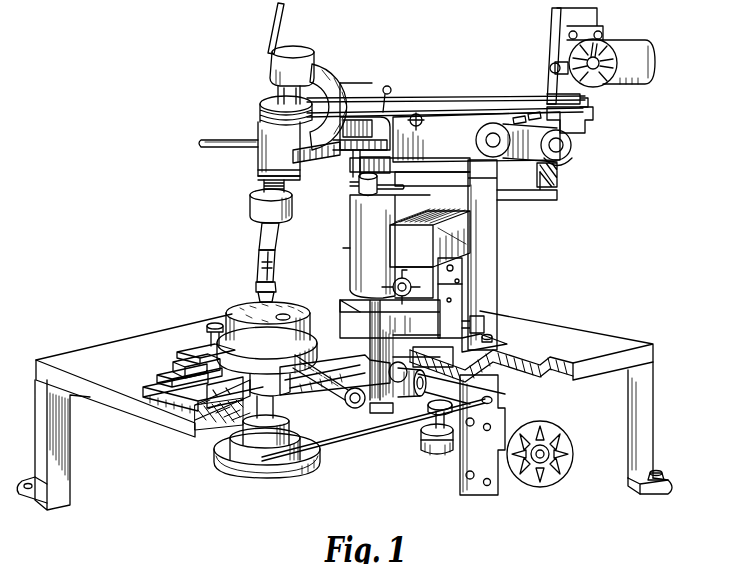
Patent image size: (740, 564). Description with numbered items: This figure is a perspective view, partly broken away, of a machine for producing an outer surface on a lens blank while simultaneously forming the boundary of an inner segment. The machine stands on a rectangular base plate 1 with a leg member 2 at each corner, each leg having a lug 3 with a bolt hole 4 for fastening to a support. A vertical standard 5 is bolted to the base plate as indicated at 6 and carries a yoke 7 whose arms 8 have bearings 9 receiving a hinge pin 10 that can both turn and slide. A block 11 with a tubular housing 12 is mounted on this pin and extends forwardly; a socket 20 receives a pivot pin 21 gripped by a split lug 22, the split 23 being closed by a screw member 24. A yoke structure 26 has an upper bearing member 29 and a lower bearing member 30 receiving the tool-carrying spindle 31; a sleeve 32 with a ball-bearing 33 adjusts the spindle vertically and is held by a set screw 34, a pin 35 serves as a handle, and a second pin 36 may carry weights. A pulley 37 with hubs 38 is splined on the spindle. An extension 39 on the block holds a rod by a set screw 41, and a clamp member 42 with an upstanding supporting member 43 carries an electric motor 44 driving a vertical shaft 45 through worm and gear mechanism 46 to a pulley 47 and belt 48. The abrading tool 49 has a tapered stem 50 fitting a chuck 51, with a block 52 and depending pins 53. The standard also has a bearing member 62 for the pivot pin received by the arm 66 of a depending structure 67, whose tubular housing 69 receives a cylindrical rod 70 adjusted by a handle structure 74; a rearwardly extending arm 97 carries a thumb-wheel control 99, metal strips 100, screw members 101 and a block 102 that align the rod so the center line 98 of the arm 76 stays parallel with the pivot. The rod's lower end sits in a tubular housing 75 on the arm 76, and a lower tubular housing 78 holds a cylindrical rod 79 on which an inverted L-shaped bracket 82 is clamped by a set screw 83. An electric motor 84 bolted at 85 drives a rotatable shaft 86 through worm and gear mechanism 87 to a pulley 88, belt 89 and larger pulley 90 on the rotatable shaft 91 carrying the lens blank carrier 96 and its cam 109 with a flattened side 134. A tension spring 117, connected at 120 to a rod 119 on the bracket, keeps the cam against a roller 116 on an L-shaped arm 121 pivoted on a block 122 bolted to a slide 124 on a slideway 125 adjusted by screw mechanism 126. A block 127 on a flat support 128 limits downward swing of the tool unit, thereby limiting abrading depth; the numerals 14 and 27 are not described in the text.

The base plate 1 is at (577, 338).
The leg member 2 is at (640, 395).
The lug 3 is at (643, 488).
The bolt hole 4 is at (666, 478).
The vertical standard 5 is at (485, 266).
The bolted connection 6 is at (500, 342).
The yoke 7 is at (541, 192).
The arm 8 is at (360, 168).
The bearing 9 is at (563, 160).
The hinge pin 10 is at (571, 146).
The block 11 is at (442, 136).
The tubular housing 12 is at (478, 124).
The head 14 is at (343, 83).
The socket 20 is at (397, 148).
The pivot pin 21 is at (351, 140).
The upstanding lug 22 is at (397, 120).
The split 23 is at (386, 86).
The screw member 24 is at (424, 114).
The yoke structure 26 is at (320, 83).
The block 27 is at (318, 165).
The bearing member 29 is at (290, 70).
The bearing member 30 is at (272, 157).
The tool-carrying spindle 31 is at (258, 238).
The sleeve 32 is at (262, 186).
The ball-bearing 33 is at (255, 208).
The set screw 34 is at (270, 171).
The pin 35 is at (200, 143).
The second pin 36 is at (272, 20).
The pulley 37 is at (260, 107).
The hub 38 is at (278, 92).
The extension 39 is at (516, 116).
The set screw 41 is at (532, 112).
The clamp member 42 is at (580, 118).
The upstanding supporting member 43 is at (552, 40).
The electric motor 44 is at (621, 44).
The vertical shaft 45 is at (555, 70).
The speed-reducing worm and gear mechanism 46 is at (604, 62).
The pulley 47 is at (590, 100).
The belt 48 is at (473, 118).
The abrading tool 49 is at (256, 314).
The tapered stem 50 is at (270, 266).
The chuck 51 is at (262, 254).
The block 52 is at (250, 286).
The depending pin 53 is at (252, 303).
The bearing member 62 is at (450, 196).
The upper rearwardly extending arm 66 is at (410, 202).
The depending structure 67 is at (346, 252).
The tubular housing 69 is at (380, 252).
The cylindrical rod 70 is at (370, 318).
The handle structure 74 is at (357, 188).
The tubular housing 75 is at (338, 366).
The arm 76 is at (326, 398).
The tubular housing 78 is at (357, 408).
The cylindrical rod 79 is at (380, 414).
The inverted L-shaped bracket 82 is at (478, 486).
The set screw 83 is at (426, 383).
The electric motor 84 is at (541, 488).
The bolts 85 is at (491, 485).
The rotatable shaft 86 is at (433, 448).
The worm and gear speed-reducing mechanism 87 is at (448, 455).
The pulley 88 is at (472, 428).
The belt 89 is at (378, 436).
The pulley 90 is at (268, 464).
The rotatable shaft 91 is at (270, 395).
The lens blank carrier 96 is at (280, 312).
The rearwardly extending arm 97 is at (440, 271).
The center line 98 is at (310, 384).
The thumb-wheel control 99 is at (385, 288).
The strip of metal 100 is at (455, 288).
The screw member 101 is at (482, 320).
The block 102 is at (365, 306).
The cam 109 is at (312, 343).
The roller 116 is at (222, 336).
The tension spring 117 is at (422, 428).
The rod 119 is at (493, 399).
The spring connection 120 is at (434, 440).
The L-shaped arm 121 is at (205, 346).
The block 122 is at (168, 370).
The slide 124 is at (168, 383).
The slideway 125 is at (175, 400).
The screw mechanism 126 is at (196, 418).
The block 127 is at (500, 195).
The flat support 128 is at (490, 206).
The flattened side 134 is at (240, 370).